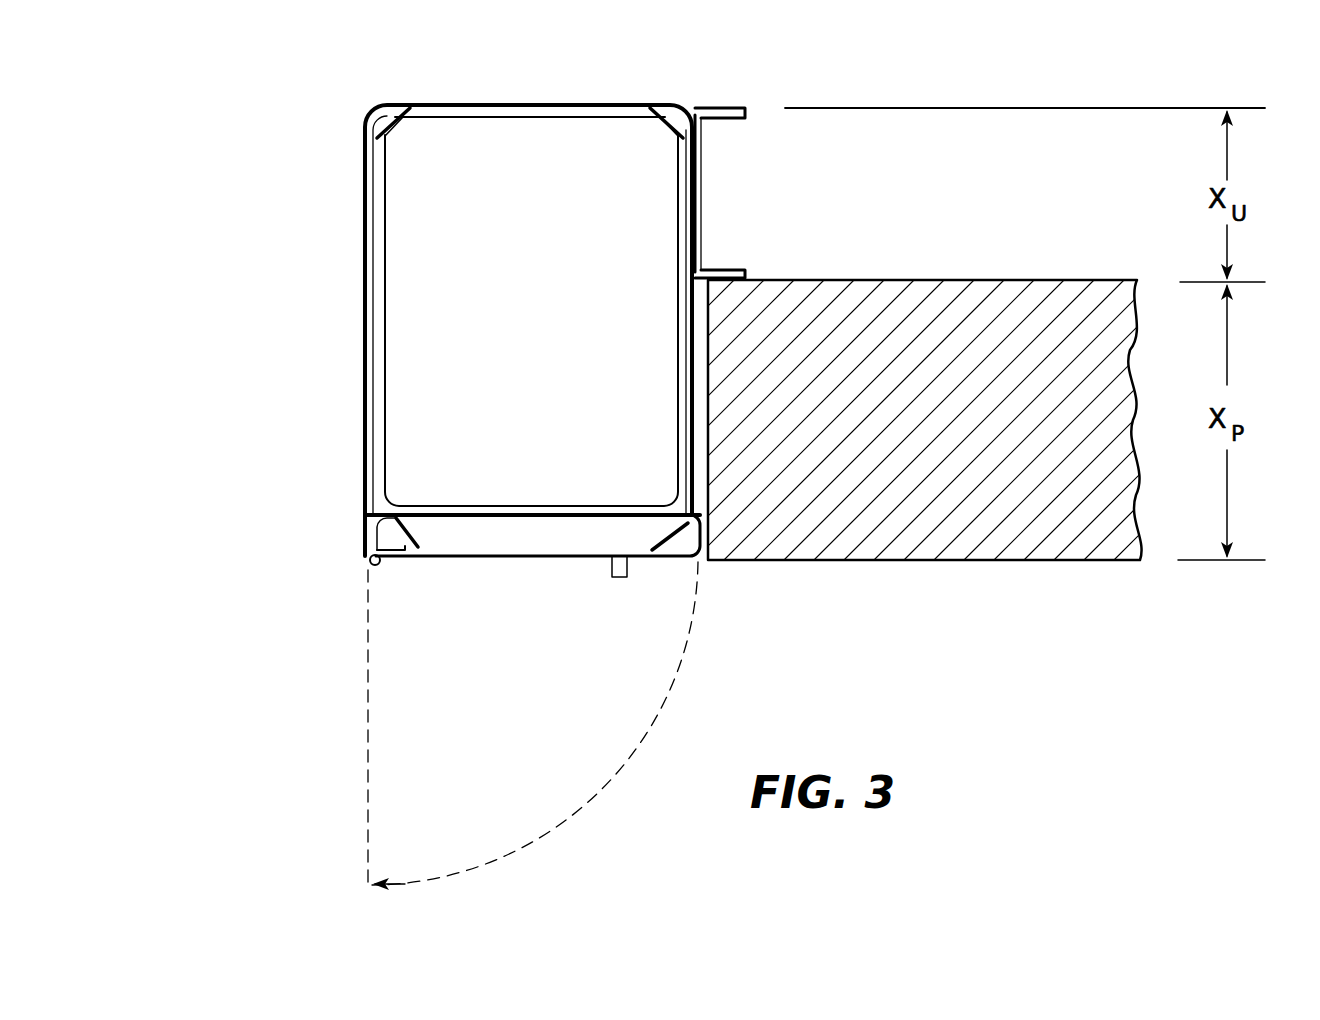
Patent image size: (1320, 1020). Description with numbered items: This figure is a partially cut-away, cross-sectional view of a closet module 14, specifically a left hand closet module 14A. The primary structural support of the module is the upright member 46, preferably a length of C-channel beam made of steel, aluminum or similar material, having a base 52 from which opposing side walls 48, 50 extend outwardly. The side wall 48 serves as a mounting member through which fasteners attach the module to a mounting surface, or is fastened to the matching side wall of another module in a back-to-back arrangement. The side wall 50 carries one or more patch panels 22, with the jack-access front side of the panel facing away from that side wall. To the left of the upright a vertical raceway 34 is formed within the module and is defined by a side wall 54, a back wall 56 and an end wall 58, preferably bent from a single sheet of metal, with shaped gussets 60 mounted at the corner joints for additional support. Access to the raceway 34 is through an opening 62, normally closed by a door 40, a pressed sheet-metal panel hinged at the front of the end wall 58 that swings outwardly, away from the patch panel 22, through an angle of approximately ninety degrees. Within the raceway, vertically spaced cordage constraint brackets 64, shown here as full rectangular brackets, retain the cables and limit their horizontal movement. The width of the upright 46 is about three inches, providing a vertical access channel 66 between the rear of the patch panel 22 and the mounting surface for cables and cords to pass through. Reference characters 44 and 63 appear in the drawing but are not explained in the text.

The left hand closet module 14A is at (318, 497).
The closet module 14 is at (378, 636).
The patch panel 22 is at (876, 515).
The vertical raceway 34 is at (430, 285).
The door 40 is at (540, 558).
The support bracket 44 is at (658, 558).
The upright member 46 is at (788, 155).
The side wall 48 is at (727, 110).
The side wall 50 is at (742, 270).
The base 52 is at (704, 151).
The side wall 54 is at (692, 220).
The back wall 56 is at (490, 104).
The end wall 58 is at (366, 246).
The shaped gusset 60 is at (390, 128).
The opening 62 is at (537, 496).
The pivot 63 is at (372, 566).
The cordage constraint bracket 64 is at (684, 300).
The vertical access channel 66 is at (1076, 182).